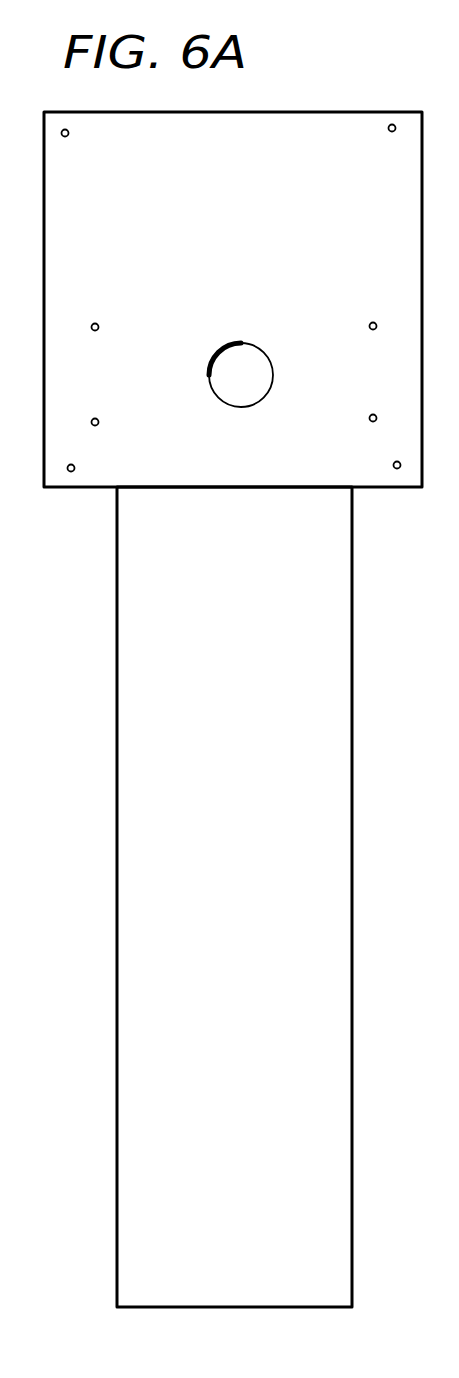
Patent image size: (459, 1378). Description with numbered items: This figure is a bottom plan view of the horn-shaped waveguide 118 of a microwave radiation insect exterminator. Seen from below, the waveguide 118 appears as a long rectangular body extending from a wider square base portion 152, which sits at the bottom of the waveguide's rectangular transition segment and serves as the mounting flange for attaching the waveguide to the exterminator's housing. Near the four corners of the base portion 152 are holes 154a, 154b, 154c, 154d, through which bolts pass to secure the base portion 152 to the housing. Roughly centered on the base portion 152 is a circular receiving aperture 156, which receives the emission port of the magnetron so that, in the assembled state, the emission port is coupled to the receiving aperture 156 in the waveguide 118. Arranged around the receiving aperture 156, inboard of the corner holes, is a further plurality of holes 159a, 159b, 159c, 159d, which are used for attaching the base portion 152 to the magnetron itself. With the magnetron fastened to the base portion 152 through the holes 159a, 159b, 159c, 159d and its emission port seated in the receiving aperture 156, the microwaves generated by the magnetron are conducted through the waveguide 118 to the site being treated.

The waveguide 118 is at (115, 923).
The base portion 152 is at (340, 112).
The hole 154a is at (70, 135).
The hole 154b is at (388, 130).
The hole 154c is at (76, 466).
The hole 154d is at (392, 464).
The receiving aperture 156 is at (240, 343).
The hole 159a is at (100, 324).
The hole 159b is at (371, 321).
The hole 159c is at (100, 419).
The hole 159d is at (368, 418).